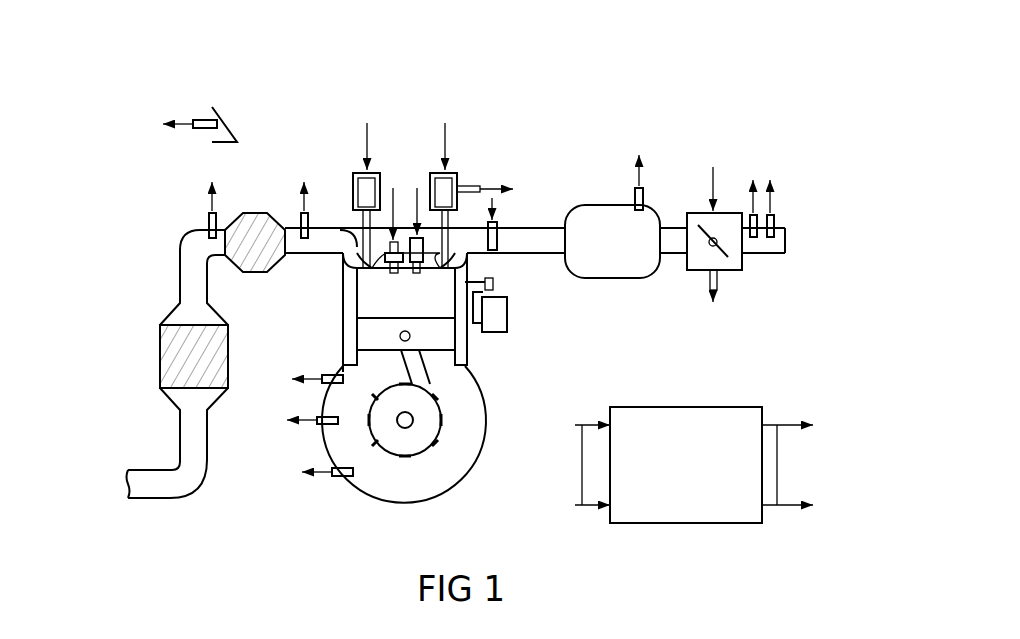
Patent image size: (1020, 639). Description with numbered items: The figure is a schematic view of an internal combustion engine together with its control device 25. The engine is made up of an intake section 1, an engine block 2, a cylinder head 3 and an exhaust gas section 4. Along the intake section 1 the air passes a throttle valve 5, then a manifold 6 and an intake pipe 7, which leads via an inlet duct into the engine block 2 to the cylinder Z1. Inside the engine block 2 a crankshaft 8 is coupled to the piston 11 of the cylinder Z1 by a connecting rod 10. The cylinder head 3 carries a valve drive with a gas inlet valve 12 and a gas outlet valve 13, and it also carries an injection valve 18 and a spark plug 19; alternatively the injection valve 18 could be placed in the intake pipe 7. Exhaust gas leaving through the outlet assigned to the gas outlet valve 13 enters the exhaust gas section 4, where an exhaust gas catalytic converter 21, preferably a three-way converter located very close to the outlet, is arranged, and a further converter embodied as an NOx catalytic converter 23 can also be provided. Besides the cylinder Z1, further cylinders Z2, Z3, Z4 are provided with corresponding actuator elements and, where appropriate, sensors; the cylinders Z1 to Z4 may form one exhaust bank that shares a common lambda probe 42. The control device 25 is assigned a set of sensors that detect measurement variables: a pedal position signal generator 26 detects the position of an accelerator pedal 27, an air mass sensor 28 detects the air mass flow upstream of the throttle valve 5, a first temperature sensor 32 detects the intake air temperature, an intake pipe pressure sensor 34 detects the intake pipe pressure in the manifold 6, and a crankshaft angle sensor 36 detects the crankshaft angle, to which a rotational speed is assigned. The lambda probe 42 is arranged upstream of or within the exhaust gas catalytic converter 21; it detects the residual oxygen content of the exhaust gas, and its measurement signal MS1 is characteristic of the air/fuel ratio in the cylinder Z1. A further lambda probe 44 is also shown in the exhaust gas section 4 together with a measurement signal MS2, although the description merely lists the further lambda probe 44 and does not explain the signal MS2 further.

The intake section 1 is at (610, 292).
The engine block 2 is at (332, 315).
The cylinder head 3 is at (463, 143).
The exhaust gas section 4 is at (170, 297).
The throttle valve 5 is at (707, 217).
The manifold 6 is at (648, 280).
The intake pipe 7 is at (545, 230).
The crankshaft 8 is at (413, 420).
The connecting rod 10 is at (417, 378).
The piston 11 is at (433, 345).
The gas inlet valve 12 is at (468, 267).
The gas outlet valve 13 is at (357, 279).
The injection valve 18 is at (410, 238).
The spark plug 19 is at (396, 277).
The exhaust gas catalytic converter 21 is at (224, 261).
The NOx catalytic converter 23 is at (160, 357).
The control device 25 is at (678, 523).
The pedal position signal generator 26 is at (197, 116).
The accelerator pedal 27 is at (228, 118).
The air mass sensor 28 is at (742, 215).
The first temperature sensor 32 is at (777, 219).
The intake pipe pressure sensor 34 is at (625, 200).
The crankshaft angle sensor 36 is at (318, 426).
The lambda probe 42 is at (297, 224).
The further lambda probe 44 is at (207, 229).
The cylinder Z1 is at (463, 345).
The cylinder Z2 is at (502, 313).
The cylinder Z3 is at (502, 295).
The cylinder Z4 is at (488, 284).
The measurement signal of the binary lambda probe MS1 is at (305, 180).
The second measurement signal MS2 is at (204, 180).